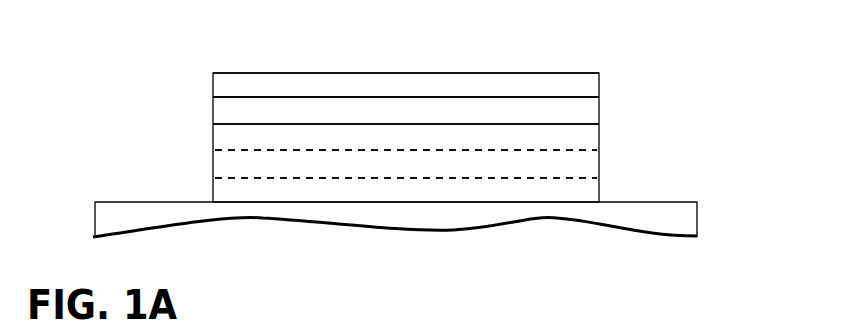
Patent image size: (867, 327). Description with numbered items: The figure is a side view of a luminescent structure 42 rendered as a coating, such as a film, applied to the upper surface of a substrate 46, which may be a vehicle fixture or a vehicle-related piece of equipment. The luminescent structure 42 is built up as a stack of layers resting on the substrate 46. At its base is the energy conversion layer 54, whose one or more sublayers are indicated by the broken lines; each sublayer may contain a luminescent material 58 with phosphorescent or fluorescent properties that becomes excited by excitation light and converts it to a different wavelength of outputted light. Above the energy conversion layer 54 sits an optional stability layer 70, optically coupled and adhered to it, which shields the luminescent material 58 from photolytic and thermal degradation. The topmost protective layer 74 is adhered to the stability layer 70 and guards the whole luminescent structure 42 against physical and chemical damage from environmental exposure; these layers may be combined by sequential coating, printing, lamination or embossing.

The luminescent structure 42 is at (543, 47).
The protective layer 74 is at (300, 73).
The stability layer 70 is at (213, 108).
The energy conversion layer 54 is at (213, 160).
The luminescent material 58 is at (557, 163).
The substrate 46 is at (643, 202).